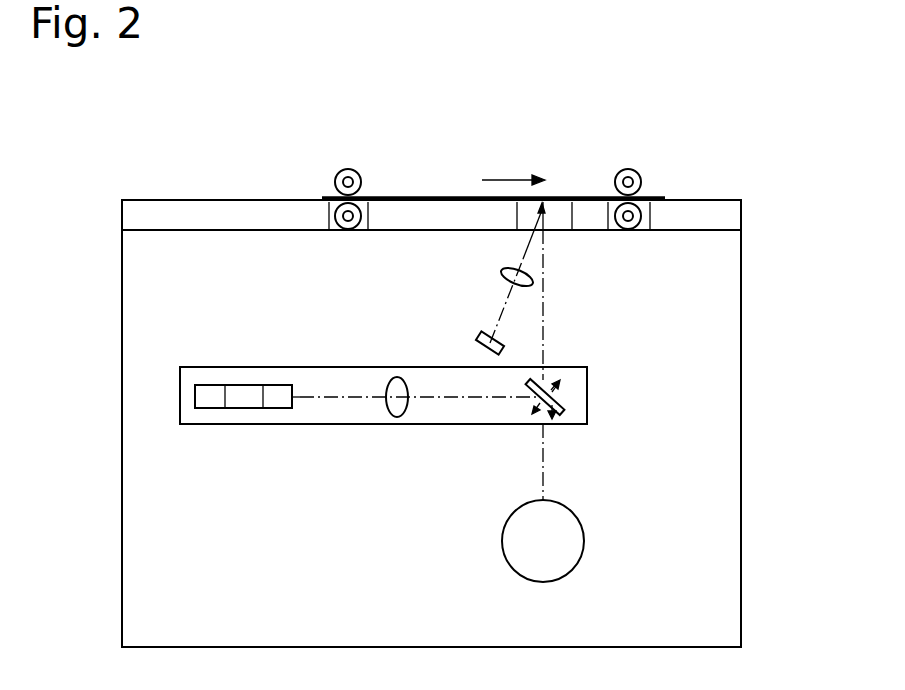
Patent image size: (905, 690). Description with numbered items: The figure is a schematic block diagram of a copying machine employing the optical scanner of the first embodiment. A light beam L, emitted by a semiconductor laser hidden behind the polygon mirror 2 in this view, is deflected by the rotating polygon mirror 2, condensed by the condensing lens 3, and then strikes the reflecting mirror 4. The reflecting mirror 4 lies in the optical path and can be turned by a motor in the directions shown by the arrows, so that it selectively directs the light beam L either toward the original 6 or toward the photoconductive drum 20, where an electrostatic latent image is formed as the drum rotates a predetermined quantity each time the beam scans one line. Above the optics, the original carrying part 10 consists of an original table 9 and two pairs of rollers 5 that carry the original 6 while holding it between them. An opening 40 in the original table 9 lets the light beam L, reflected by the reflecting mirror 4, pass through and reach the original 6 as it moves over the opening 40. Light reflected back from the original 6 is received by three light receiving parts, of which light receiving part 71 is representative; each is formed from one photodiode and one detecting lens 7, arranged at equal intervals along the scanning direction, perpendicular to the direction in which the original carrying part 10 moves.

The polygon mirror 2 is at (242, 388).
The condensing lens 3 is at (399, 409).
The reflecting mirror 4 is at (557, 402).
The rollers 5 is at (357, 168).
The original 6 is at (402, 196).
The photodiodes and detecting lenses 7 is at (498, 273).
The original table 9 is at (742, 217).
The original carrying part 10 is at (658, 188).
The photoconductive drum 20 is at (578, 513).
The opening 40 is at (560, 231).
The light receiving part 71 is at (388, 279).
The light beam L is at (462, 399).